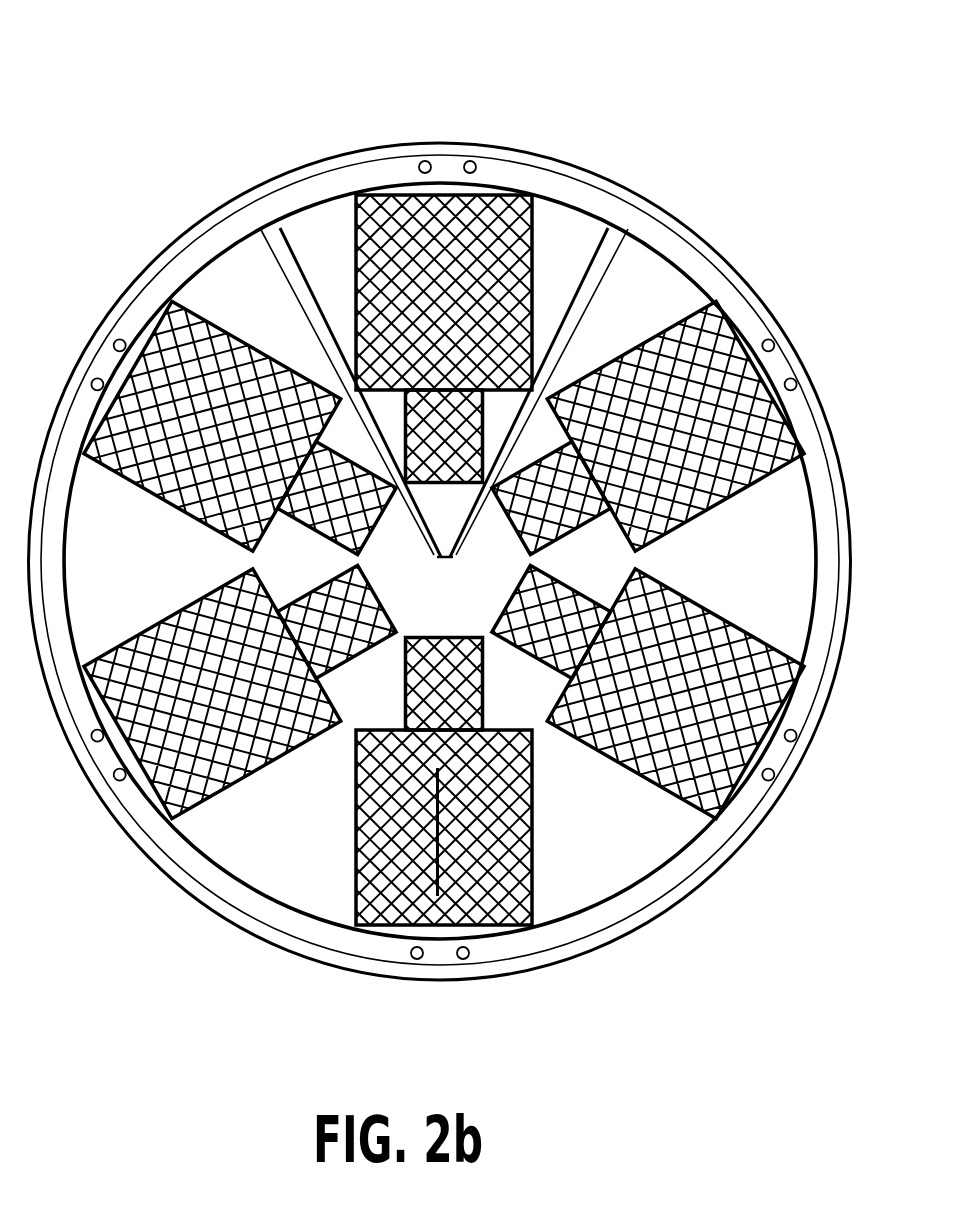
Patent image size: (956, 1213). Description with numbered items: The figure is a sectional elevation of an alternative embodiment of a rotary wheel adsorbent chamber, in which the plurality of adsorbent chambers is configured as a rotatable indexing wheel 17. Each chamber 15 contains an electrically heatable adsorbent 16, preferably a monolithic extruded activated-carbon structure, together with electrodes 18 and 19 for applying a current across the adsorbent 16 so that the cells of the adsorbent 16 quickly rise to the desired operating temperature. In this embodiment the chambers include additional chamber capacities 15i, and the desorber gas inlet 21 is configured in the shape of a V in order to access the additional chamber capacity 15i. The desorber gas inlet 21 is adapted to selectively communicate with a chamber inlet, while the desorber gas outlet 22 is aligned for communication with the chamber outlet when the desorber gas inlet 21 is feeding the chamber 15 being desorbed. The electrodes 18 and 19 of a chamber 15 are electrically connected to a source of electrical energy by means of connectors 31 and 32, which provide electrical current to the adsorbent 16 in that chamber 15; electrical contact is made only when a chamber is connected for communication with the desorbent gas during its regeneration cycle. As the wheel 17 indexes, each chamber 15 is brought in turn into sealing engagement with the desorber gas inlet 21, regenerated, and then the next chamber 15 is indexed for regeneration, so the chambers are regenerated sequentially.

The chamber 15 is at (540, 213).
The additional chamber capacity 15i is at (560, 585).
The electrically heatable adsorbent 16 is at (264, 346).
The rotatable indexing wheel 17 is at (722, 238).
The electrode 18 is at (355, 236).
The electrode 19 is at (560, 315).
The desorber gas inlet 21 is at (606, 252).
The desorber gas outlet 22 is at (468, 615).
The connector 31 is at (424, 161).
The connector 32 is at (470, 161).